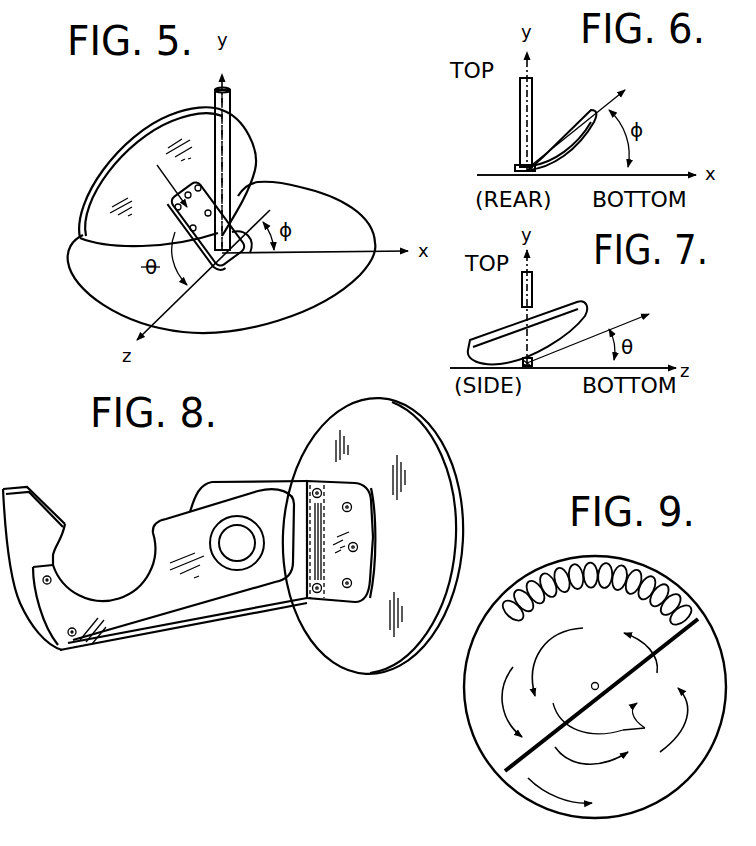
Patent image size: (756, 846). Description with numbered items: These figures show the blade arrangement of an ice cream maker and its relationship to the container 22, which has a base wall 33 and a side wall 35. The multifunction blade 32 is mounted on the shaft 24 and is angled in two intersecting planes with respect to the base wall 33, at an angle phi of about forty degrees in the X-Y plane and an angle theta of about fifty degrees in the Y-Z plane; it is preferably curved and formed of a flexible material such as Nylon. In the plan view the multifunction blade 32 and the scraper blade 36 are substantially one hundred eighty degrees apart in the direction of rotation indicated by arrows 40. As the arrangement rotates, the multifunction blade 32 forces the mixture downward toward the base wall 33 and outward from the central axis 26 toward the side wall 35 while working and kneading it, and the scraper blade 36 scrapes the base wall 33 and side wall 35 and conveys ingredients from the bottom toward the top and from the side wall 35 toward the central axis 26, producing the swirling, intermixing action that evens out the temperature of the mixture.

In FIG. 9, the container 22 is at (705, 597).
In FIG. 6, the shaft 24 is at (517, 137).
In FIG. 7, the shaft 24 is at (521, 295).
In FIG. 9, the shaft 24 is at (594, 681).
In FIG. 9, the central axis 26 is at (597, 690).
In FIG. 5, the multifunction blade 32 is at (125, 140).
In FIG. 6, the multifunction blade 32 is at (563, 127).
In FIG. 7, the multifunction blade 32 is at (551, 300).
In FIG. 8, the multifunction blade 32 is at (358, 397).
In FIG. 9, the multifunction blade 32 is at (613, 667).
In FIG. 5, the base wall 33 is at (96, 270).
In FIG. 6, the base wall 33 is at (657, 169).
In FIG. 7, the base wall 33 is at (651, 364).
In FIG. 9, the base wall 33 is at (666, 788).
In FIG. 9, the side wall 35 is at (722, 684).
In FIG. 8, the scraper blade 36 is at (32, 493).
In FIG. 9, the scraper blade 36 is at (540, 734).
In FIG. 8, the arrows indicating direction of rotation 40 is at (183, 477).
In FIG. 9, the arrows indicating direction of rotation 40 is at (613, 721).